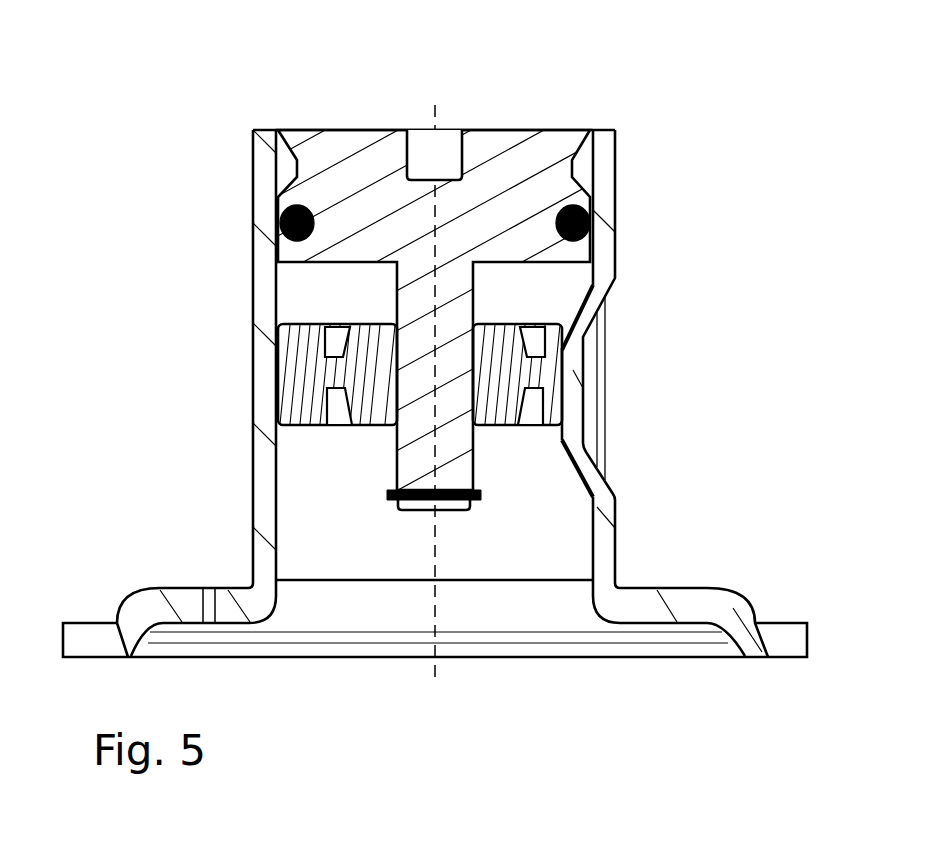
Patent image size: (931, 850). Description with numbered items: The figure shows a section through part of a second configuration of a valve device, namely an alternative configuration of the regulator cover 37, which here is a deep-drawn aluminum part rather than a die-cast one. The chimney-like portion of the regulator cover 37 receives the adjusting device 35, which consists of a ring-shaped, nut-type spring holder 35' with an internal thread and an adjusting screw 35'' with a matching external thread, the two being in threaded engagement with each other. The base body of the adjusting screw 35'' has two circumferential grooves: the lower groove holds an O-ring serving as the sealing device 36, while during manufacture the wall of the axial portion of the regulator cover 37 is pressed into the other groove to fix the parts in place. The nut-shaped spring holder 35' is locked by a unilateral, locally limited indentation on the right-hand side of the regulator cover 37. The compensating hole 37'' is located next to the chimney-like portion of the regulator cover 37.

The adjusting device 35 is at (417, 338).
The spring holder 35' is at (509, 330).
The adjusting screw 35'' is at (459, 338).
The sealing device 36 is at (590, 212).
The regulator cover 37 is at (367, 304).
The compensating hole 37'' is at (442, 562).